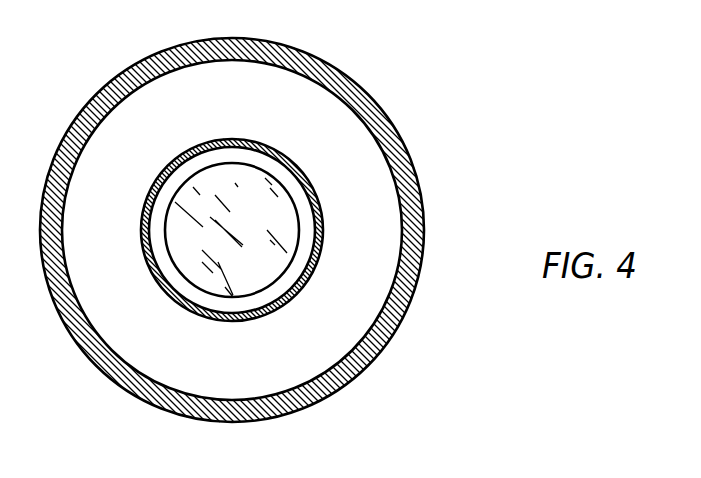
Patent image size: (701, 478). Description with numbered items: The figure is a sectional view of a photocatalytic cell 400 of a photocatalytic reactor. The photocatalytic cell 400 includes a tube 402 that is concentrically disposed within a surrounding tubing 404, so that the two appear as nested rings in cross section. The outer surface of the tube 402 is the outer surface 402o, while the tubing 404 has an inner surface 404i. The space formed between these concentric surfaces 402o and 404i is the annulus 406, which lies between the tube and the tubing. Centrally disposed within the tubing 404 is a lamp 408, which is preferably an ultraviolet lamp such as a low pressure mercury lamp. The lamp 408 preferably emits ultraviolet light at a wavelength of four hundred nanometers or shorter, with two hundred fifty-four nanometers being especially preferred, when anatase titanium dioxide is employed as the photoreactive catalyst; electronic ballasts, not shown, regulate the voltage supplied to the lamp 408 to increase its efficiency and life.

The photocatalytic cell 400 is at (88, 73).
The tube 402 is at (258, 145).
The outer surface of tube 402o is at (313, 188).
The tubing 404 is at (312, 53).
The inner surface of tubing 404i is at (385, 325).
The annulus 406 is at (135, 343).
The lamp 408 is at (204, 192).